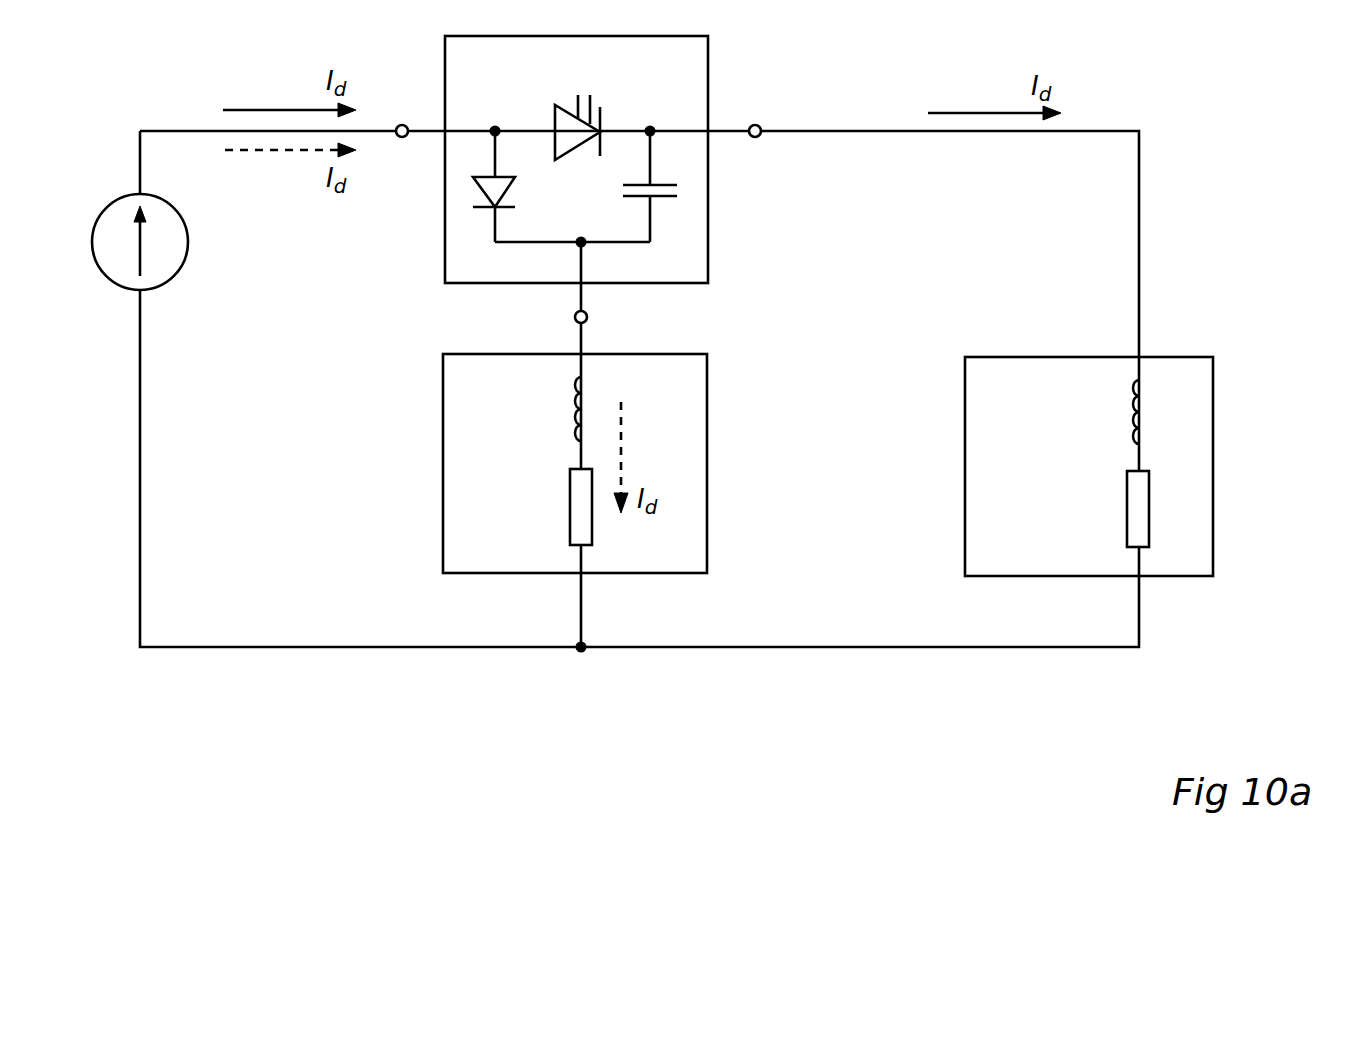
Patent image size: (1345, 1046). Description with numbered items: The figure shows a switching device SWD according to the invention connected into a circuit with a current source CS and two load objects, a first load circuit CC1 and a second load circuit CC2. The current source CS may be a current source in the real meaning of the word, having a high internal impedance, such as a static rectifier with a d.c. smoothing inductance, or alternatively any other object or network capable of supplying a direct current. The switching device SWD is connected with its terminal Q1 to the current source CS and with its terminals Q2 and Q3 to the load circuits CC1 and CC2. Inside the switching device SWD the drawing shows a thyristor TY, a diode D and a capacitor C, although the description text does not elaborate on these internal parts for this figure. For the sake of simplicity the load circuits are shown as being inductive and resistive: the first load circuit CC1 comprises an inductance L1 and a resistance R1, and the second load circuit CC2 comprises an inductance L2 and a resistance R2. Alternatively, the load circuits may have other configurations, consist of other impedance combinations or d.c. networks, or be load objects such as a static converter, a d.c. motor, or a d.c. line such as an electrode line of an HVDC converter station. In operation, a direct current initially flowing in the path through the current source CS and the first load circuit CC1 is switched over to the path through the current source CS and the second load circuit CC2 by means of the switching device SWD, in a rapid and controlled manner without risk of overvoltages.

The current source CS is at (165, 285).
The switching device SWD is at (576, 159).
The thyristor TY is at (605, 105).
The diode D is at (507, 197).
The capacitor C is at (660, 205).
The terminal Q1 is at (401, 122).
The terminal Q2 is at (754, 124).
The terminal Q3 is at (589, 316).
The load circuit CC1 is at (1089, 466).
The load circuit CC2 is at (575, 463).
The inductance L1 is at (1123, 417).
The inductance L2 is at (567, 415).
The resistance R1 is at (1126, 503).
The resistance R2 is at (570, 502).